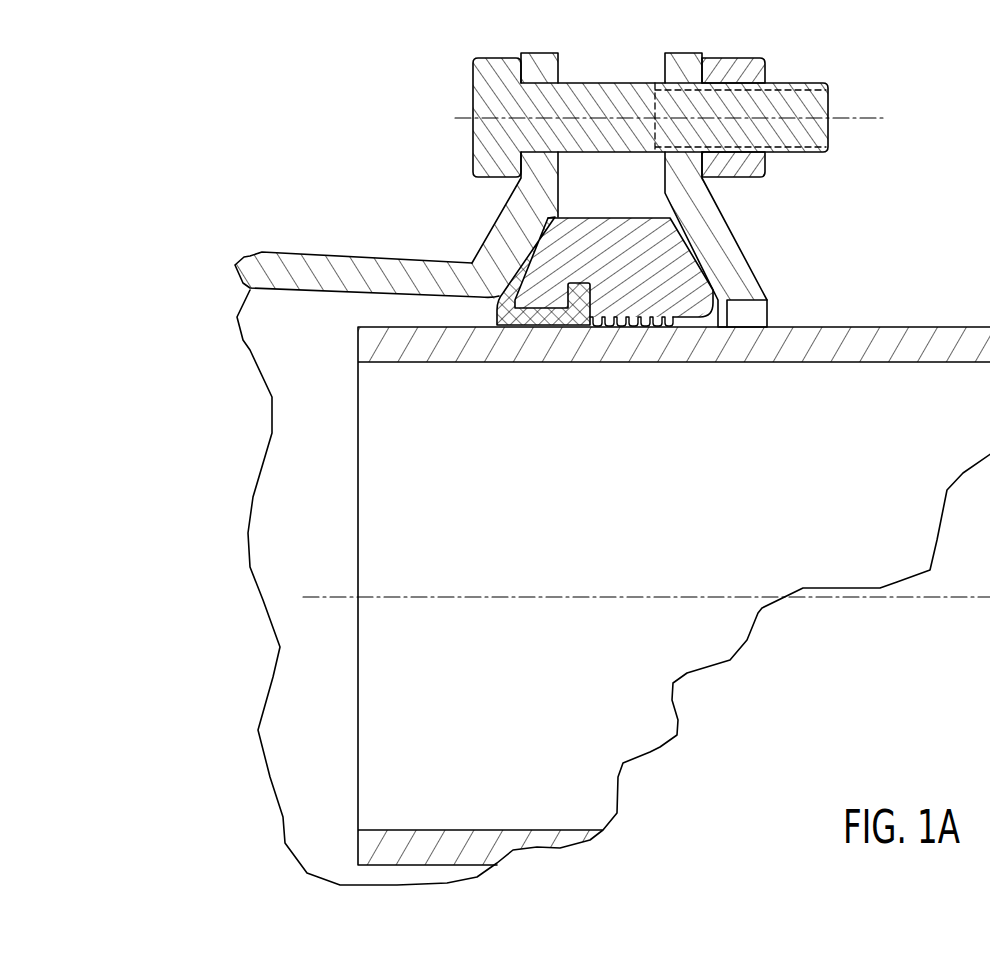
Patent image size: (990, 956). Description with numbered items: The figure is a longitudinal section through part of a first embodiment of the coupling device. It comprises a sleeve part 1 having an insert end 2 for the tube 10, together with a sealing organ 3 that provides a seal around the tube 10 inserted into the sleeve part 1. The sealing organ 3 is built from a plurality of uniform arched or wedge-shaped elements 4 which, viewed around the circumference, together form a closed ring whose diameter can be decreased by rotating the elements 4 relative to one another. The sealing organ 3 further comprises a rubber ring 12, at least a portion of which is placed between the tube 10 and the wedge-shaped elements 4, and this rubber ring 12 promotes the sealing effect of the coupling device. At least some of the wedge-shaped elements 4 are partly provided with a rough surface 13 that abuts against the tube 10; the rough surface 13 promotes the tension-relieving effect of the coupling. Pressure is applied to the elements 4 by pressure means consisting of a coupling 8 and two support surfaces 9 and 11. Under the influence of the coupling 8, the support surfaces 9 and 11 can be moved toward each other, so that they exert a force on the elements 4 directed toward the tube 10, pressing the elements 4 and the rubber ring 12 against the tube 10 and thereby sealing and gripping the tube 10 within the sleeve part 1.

The sleeve part 1 is at (297, 262).
The insert end 2 is at (785, 315).
The sealing organ 3 is at (599, 165).
The arched or wedge-shaped elements 4 is at (645, 235).
The coupling 8 is at (799, 62).
The support surface 9 is at (497, 240).
The tube 10 is at (920, 337).
The support surface 11 is at (717, 230).
The rubber ring 12 is at (497, 312).
The rough surface 13 is at (621, 328).